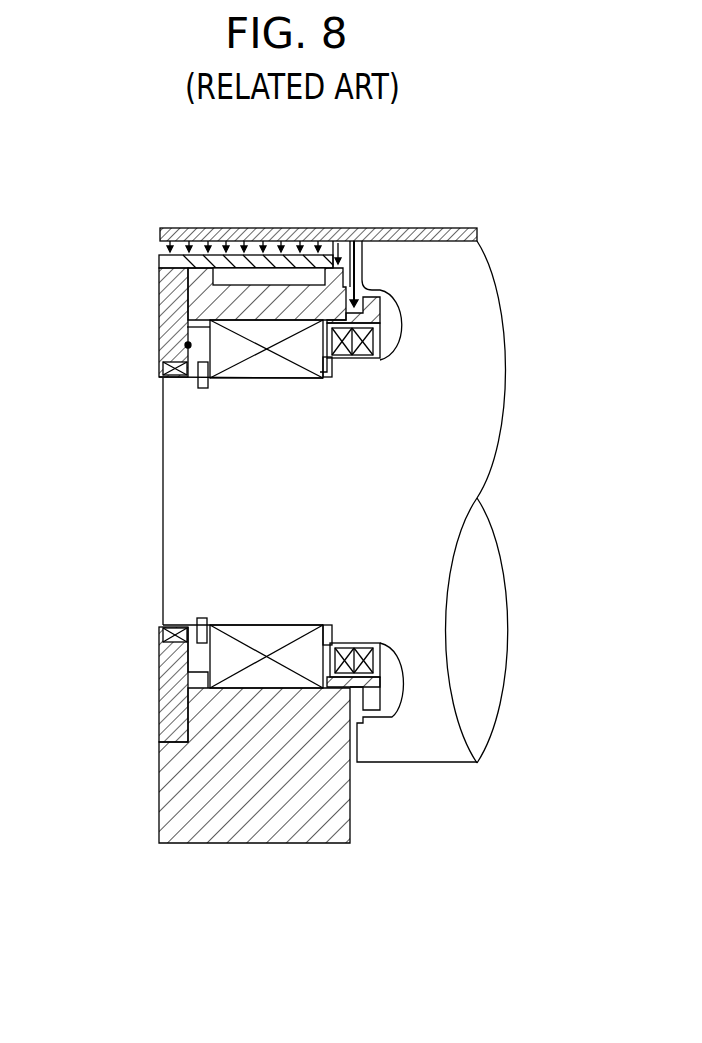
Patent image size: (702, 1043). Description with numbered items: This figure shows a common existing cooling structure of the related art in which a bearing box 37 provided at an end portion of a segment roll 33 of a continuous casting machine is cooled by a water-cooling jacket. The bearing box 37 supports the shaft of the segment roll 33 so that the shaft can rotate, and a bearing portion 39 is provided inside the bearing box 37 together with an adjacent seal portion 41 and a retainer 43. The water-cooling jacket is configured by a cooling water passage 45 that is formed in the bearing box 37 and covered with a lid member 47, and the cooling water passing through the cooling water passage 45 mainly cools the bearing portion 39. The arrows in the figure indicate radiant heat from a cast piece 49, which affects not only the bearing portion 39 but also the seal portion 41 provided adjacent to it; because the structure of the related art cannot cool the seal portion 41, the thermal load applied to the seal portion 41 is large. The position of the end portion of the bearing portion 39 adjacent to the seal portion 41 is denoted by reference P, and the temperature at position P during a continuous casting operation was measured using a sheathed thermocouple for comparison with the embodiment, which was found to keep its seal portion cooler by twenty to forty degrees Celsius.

The segment roll 33 is at (162, 516).
The bearing box 37 is at (350, 835).
The bearing portion 39 is at (237, 380).
The seal portion 41 is at (363, 362).
The retainer 43 is at (158, 295).
The cooling water passage 45 is at (289, 276).
The lid member 47 is at (216, 252).
The cast piece 49 is at (158, 249).
The position P is at (186, 345).